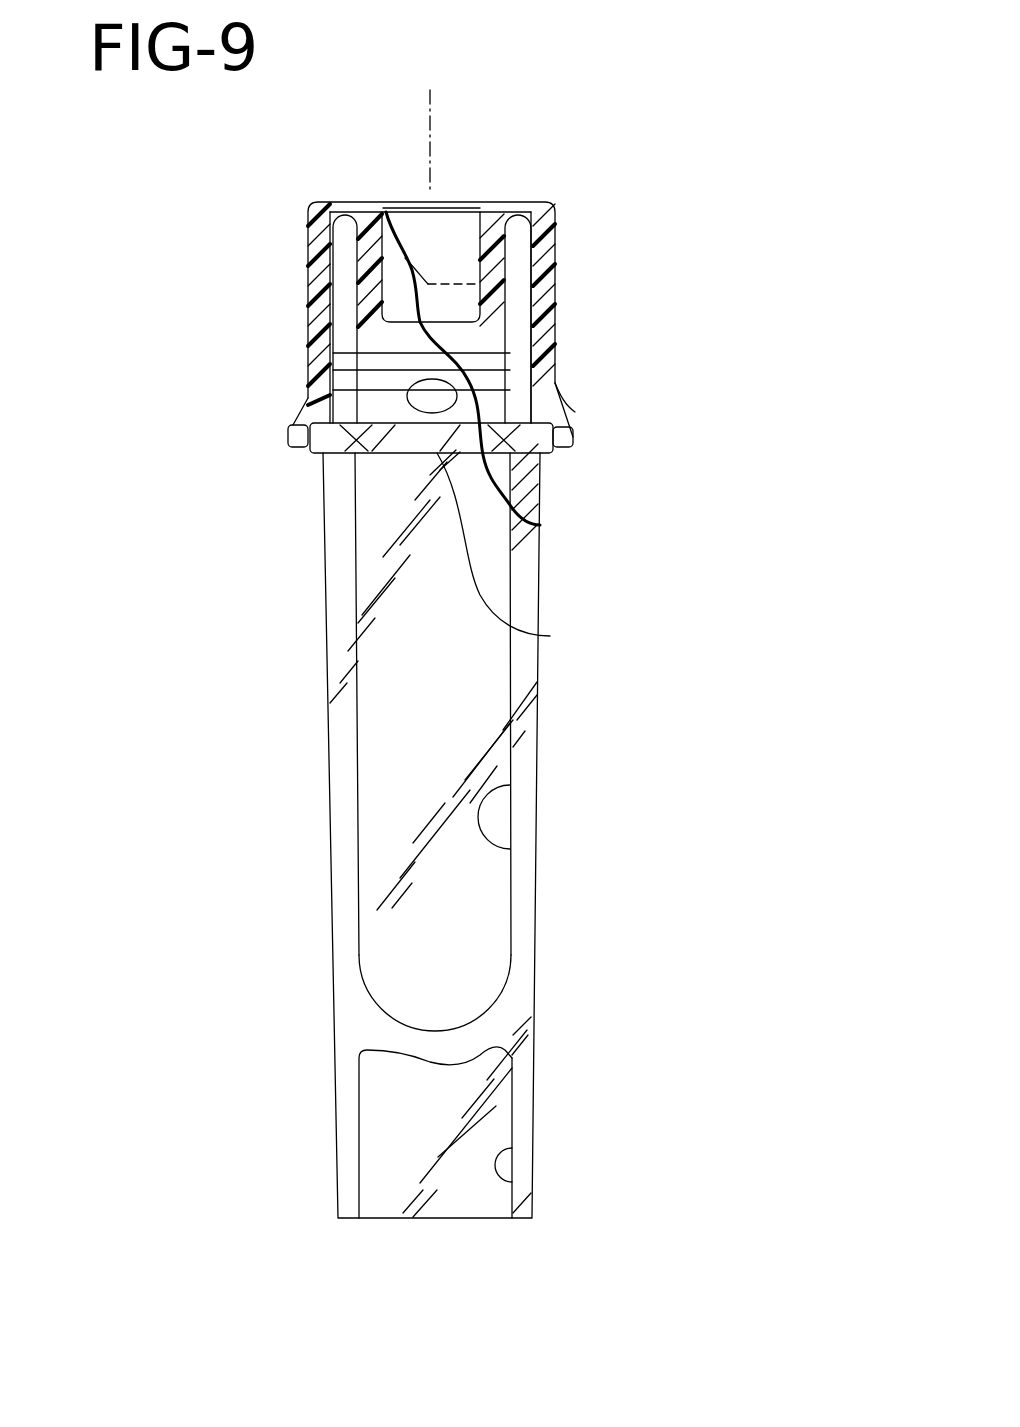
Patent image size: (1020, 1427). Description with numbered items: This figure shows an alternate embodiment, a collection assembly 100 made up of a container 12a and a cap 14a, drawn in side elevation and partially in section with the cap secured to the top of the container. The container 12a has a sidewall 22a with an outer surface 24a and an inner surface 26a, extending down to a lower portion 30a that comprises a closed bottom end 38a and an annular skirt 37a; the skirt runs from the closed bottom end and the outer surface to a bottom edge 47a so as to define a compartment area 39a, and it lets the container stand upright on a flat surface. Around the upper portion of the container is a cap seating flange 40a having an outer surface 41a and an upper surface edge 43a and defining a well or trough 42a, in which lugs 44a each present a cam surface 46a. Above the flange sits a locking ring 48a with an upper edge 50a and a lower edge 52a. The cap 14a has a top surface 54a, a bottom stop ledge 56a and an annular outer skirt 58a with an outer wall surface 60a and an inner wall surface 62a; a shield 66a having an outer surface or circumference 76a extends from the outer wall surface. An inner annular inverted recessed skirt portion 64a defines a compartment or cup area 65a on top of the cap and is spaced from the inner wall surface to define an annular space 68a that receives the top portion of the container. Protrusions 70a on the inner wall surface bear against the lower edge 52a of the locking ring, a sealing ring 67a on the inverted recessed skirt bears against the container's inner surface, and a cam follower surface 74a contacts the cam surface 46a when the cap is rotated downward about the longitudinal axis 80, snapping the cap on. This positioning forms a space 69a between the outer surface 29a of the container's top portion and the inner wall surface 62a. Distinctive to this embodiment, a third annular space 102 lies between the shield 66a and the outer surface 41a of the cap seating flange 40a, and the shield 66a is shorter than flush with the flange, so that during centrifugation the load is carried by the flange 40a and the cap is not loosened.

The collection assembly 100 is at (714, 126).
The longitudinal axis 80 is at (412, 90).
The container 12a is at (420, 890).
The cap 14a is at (406, 323).
The sidewall 22a is at (525, 750).
The outer surface 24a is at (540, 665).
The inner surface 26a is at (540, 842).
The outer surface 29a is at (388, 208).
The lower portion 30a is at (478, 968).
The annular skirt 37a is at (535, 1098).
The closed bottom end 38a is at (457, 1040).
The compartment area 39a is at (528, 1186).
The cap seating flange 40a is at (317, 455).
The outer surface 41a is at (292, 443).
The well or trough 42a is at (540, 545).
The upper surface edge 43a is at (540, 522).
The lugs 44a is at (533, 635).
The cam surface 46a is at (383, 455).
The bottom edge 47a is at (455, 1218).
The locking ring 48a is at (330, 370).
The upper edge 50a is at (330, 358).
The lower edge 52a is at (300, 410).
The top surface 54a is at (515, 205).
The bottom stop ledge 56a is at (565, 403).
The annular outer skirt 58a is at (555, 312).
The outer wall surface 60a is at (308, 237).
The inner wall surface 62a is at (555, 275).
The inner annular inverted recessed skirt portion 64a is at (553, 222).
The compartment or cup area 65a is at (463, 205).
The shield 66a is at (575, 440).
The sealing ring 67a is at (555, 368).
The annular space 68a is at (338, 203).
The space 69a is at (308, 295).
The protrusions 70a is at (460, 235).
The cam follower surface 74a is at (350, 457).
The outer surface or circumference 76a is at (577, 447).
The third annular space 102 is at (560, 453).